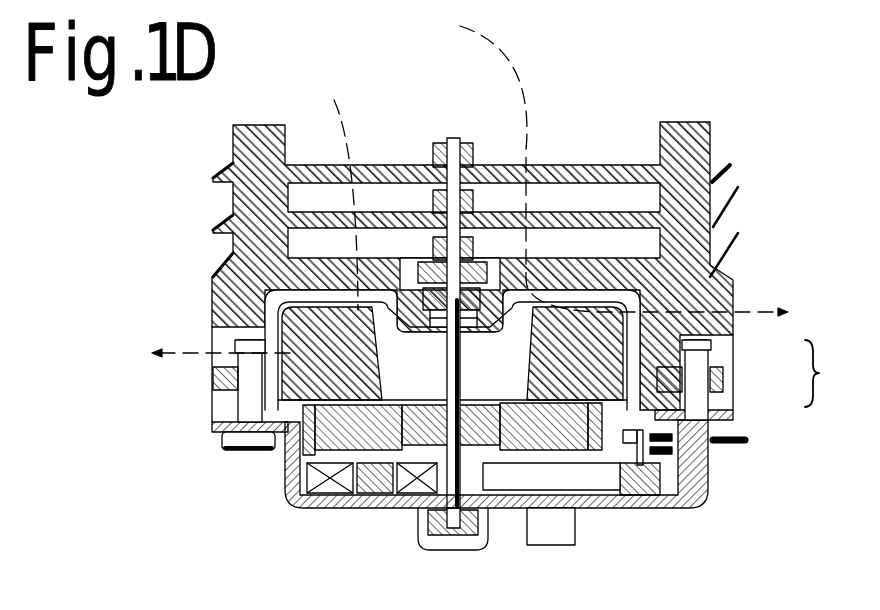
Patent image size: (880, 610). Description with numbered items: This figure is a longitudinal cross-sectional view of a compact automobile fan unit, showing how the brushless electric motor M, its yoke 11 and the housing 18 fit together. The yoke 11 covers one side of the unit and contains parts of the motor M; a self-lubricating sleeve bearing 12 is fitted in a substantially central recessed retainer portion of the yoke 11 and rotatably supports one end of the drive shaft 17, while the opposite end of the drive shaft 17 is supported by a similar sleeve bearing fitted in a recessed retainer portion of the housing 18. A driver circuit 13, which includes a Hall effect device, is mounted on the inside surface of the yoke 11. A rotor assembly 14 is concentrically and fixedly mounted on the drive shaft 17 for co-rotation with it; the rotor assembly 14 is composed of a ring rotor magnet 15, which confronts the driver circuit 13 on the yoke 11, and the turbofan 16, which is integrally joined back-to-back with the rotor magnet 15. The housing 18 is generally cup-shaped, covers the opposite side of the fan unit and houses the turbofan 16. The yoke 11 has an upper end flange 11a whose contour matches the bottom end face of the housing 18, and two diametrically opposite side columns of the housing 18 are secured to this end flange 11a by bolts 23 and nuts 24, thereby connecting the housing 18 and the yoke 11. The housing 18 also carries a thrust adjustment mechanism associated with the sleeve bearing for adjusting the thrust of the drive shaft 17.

The yoke 11 is at (678, 502).
The upper end flange 11a is at (210, 423).
The self-lubricating sleeve bearing 12 is at (585, 307).
The driver circuit 13 is at (558, 477).
The rotor assembly 14 is at (826, 373).
The ring rotor magnet 15 is at (600, 430).
The turbofan 16 is at (610, 352).
The drive shaft 17 is at (420, 328).
The housing 18 is at (712, 180).
The bolts 23 is at (240, 450).
The nuts 24 is at (220, 378).
The electric motor M is at (290, 513).